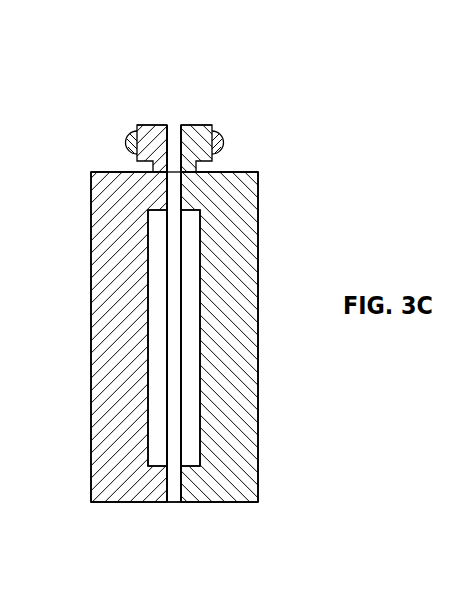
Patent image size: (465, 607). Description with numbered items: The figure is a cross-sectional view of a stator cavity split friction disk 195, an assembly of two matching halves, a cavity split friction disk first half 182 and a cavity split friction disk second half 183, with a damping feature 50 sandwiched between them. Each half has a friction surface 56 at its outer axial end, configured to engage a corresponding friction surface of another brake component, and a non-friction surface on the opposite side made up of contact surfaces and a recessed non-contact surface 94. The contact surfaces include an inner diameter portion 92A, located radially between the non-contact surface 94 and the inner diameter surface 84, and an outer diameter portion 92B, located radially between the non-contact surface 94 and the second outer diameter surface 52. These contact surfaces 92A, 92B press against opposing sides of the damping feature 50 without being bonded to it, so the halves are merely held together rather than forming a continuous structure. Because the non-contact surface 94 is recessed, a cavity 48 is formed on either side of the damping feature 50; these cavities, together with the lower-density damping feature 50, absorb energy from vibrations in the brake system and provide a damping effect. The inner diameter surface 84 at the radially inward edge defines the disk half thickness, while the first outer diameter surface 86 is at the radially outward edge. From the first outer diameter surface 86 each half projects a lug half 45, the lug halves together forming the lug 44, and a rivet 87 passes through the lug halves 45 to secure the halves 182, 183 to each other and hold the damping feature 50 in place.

The stator cavity split friction disk 195 is at (266, 74).
The lug 44 is at (173, 92).
The lug half 45 is at (158, 124).
The second outer diameter surface 52 is at (148, 124).
The rivet 87 is at (224, 130).
The first outer diameter surface 86 is at (120, 171).
The cavity split friction disk first half 182 is at (94, 171).
The cavity split friction disk second half 183 is at (256, 171).
The cavity 48 is at (155, 209).
The outer diameter portion of the contact surfaces 92B is at (167, 188).
The damping feature 50 is at (181, 252).
The inner diameter portion of the contact surfaces 92A is at (181, 500).
The friction surface 56 is at (90, 313).
The non-contact surface 94 is at (149, 345).
The inner diameter surface 84 is at (127, 503).